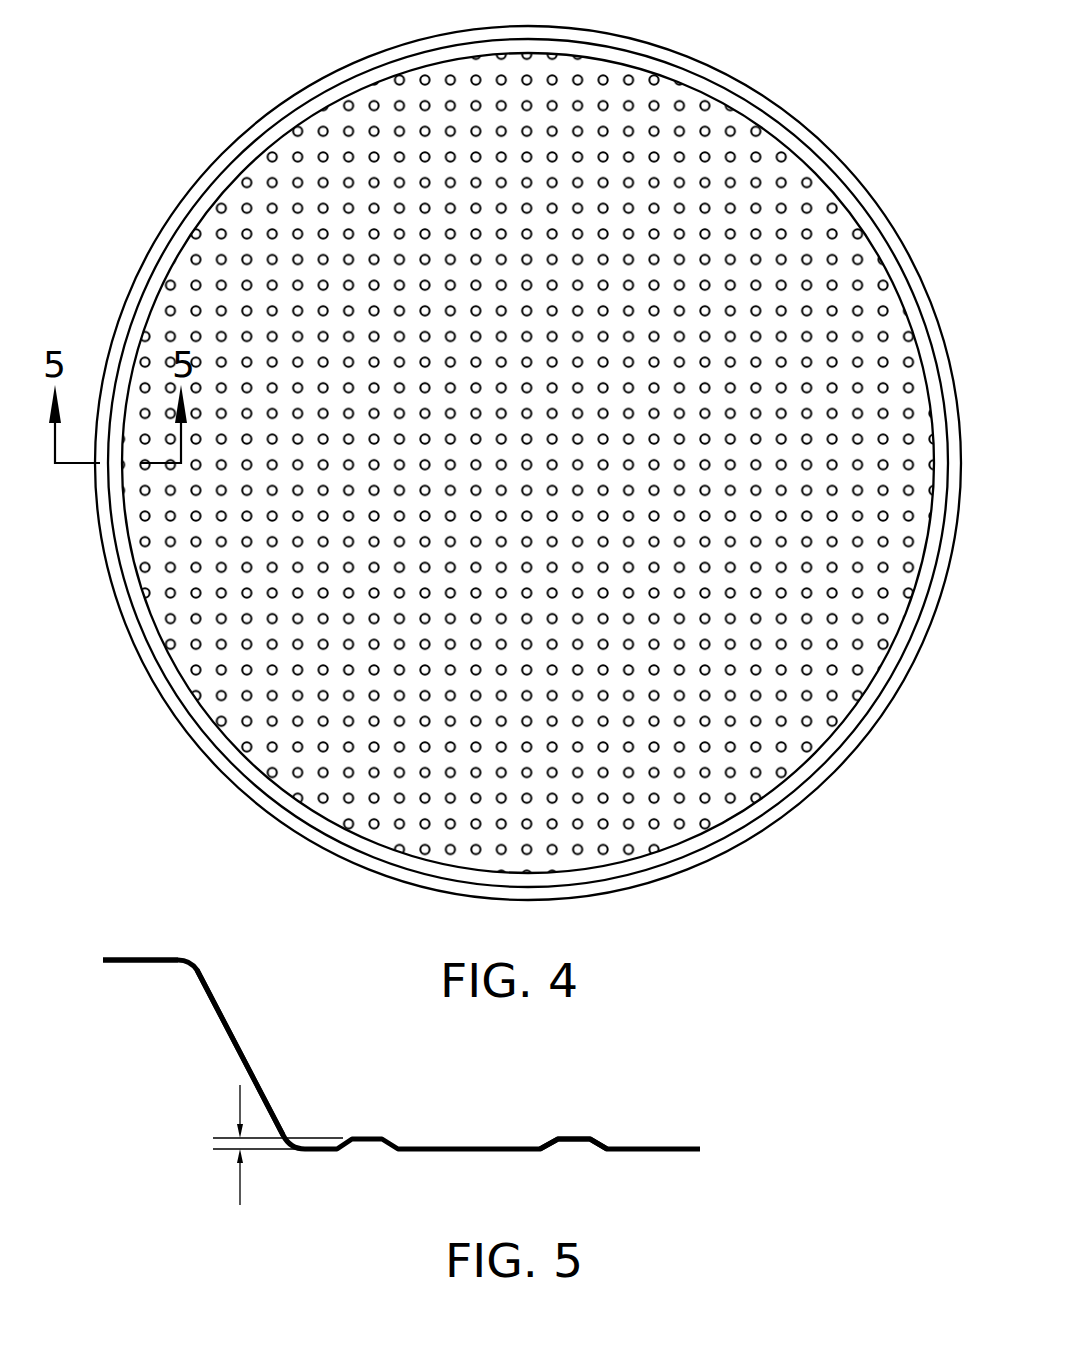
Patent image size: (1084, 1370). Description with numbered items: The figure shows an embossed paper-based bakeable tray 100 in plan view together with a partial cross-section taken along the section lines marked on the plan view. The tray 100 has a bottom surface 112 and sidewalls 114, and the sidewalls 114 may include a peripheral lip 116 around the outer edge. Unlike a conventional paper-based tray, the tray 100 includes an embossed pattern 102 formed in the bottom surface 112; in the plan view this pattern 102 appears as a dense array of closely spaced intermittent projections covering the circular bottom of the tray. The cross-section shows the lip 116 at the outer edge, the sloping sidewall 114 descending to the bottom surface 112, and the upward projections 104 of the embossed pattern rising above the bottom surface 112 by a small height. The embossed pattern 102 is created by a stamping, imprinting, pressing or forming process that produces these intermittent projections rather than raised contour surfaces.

In FIG. 4, the embossed paper-based bakeable tray 100 is at (868, 118).
In FIG. 4, the embossed pattern 102 is at (272, 172).
In FIG. 5, the raised rib / bump 104 is at (571, 1140).
In FIG. 5, the bottom surface 112 is at (658, 1148).
In FIG. 5, the sidewalls 114 is at (224, 1022).
In FIG. 5, the peripheral lip 116 is at (146, 960).